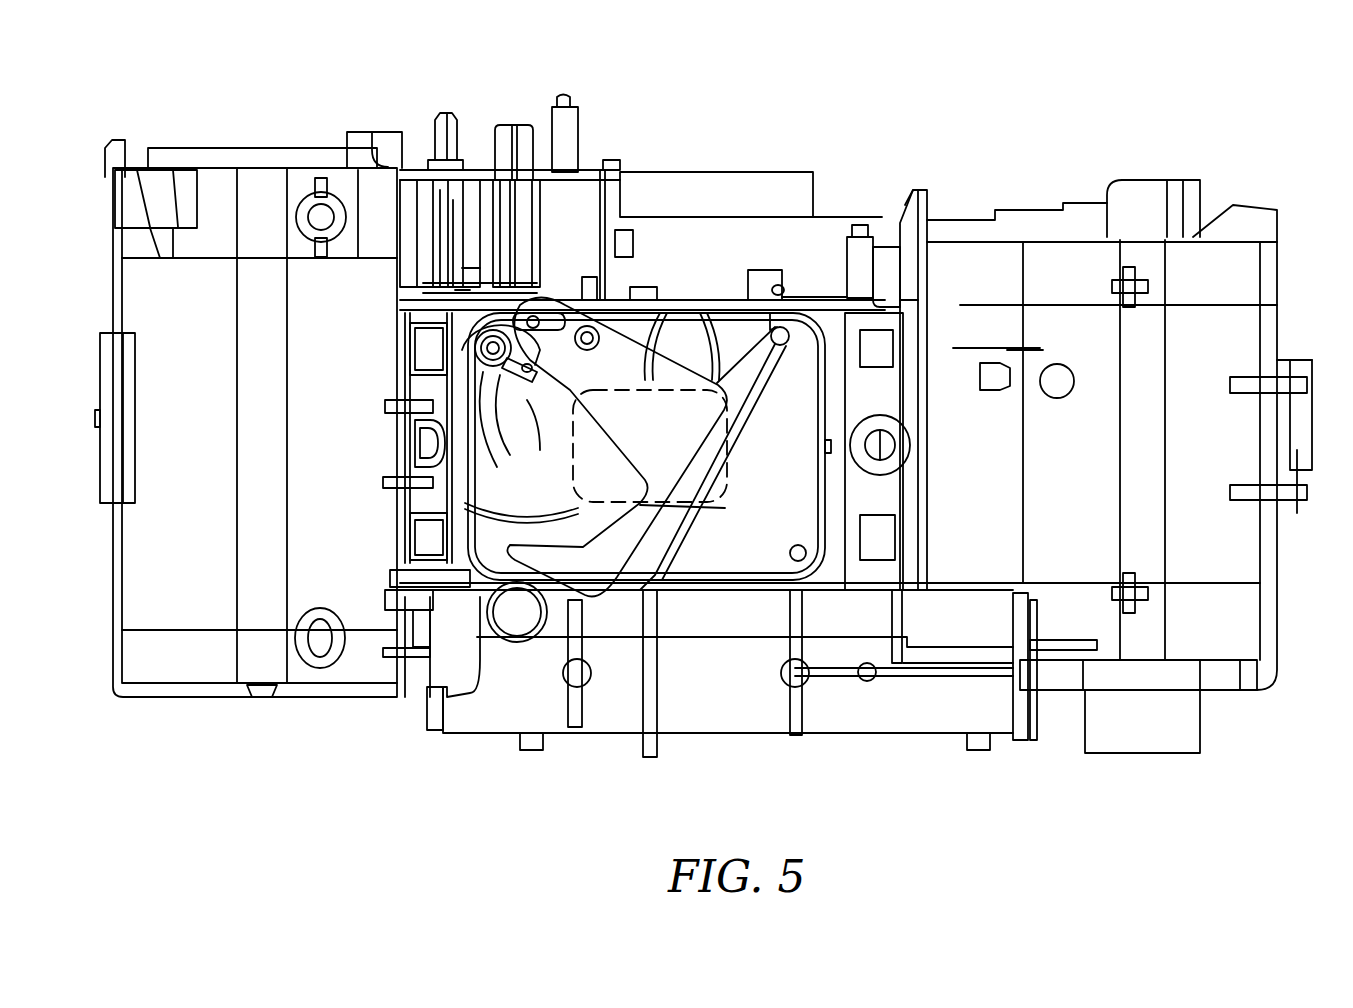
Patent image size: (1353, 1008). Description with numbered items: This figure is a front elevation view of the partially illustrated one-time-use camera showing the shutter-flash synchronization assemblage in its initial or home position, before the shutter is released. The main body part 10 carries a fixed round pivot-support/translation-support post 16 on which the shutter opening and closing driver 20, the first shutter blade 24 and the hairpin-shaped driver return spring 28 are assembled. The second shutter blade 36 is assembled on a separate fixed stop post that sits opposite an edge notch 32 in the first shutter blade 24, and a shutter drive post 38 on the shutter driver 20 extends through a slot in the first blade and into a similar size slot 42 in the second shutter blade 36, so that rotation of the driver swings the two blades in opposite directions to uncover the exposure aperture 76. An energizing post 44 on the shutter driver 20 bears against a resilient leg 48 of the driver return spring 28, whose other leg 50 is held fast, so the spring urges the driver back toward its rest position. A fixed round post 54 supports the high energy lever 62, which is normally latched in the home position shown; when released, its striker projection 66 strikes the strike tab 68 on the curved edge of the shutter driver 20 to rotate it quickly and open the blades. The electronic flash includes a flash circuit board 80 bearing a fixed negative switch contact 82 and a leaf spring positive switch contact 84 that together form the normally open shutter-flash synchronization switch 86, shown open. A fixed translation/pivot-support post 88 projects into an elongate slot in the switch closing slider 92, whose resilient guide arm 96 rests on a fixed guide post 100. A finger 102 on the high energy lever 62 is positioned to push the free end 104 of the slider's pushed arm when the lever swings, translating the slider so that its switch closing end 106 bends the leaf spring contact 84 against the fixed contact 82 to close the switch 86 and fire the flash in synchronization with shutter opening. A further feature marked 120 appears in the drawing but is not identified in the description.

The main body part 10 is at (243, 142).
The fixed round pivot-support/translation-support post 16 is at (470, 342).
The shutter opening and closing driver 20 is at (478, 362).
The first shutter blade 24 is at (767, 378).
The driver return spring 28 is at (483, 390).
The edge notch 32 is at (623, 395).
The second shutter blade 36 is at (597, 600).
The shutter drive post 38 is at (455, 290).
The slot 42 is at (533, 318).
The energizing post 44 is at (577, 427).
The resilient leg 48 is at (537, 378).
The leg 50 is at (410, 425).
The fixed round post 54 is at (445, 113).
The high energy lever 62 is at (400, 167).
The striker projection 66 is at (462, 268).
The strike tab 68 is at (528, 287).
The exposure aperture 76 is at (737, 450).
The flash circuit board 80 is at (590, 348).
The fixed negative switch contact 82 is at (933, 197).
The leaf spring positive switch contact 84 is at (897, 210).
The shutter-flash synchronization switch 86 is at (925, 183).
The fixed translation/pivot-support post 88 is at (783, 287).
The switch closing slider 92 is at (777, 327).
The resilient guide arm 96 is at (683, 300).
The fixed guide post 100 is at (640, 210).
The finger 102 is at (542, 298).
The free end 104 is at (580, 297).
The switch closing end 106 is at (865, 262).
The contact point 120 is at (727, 507).